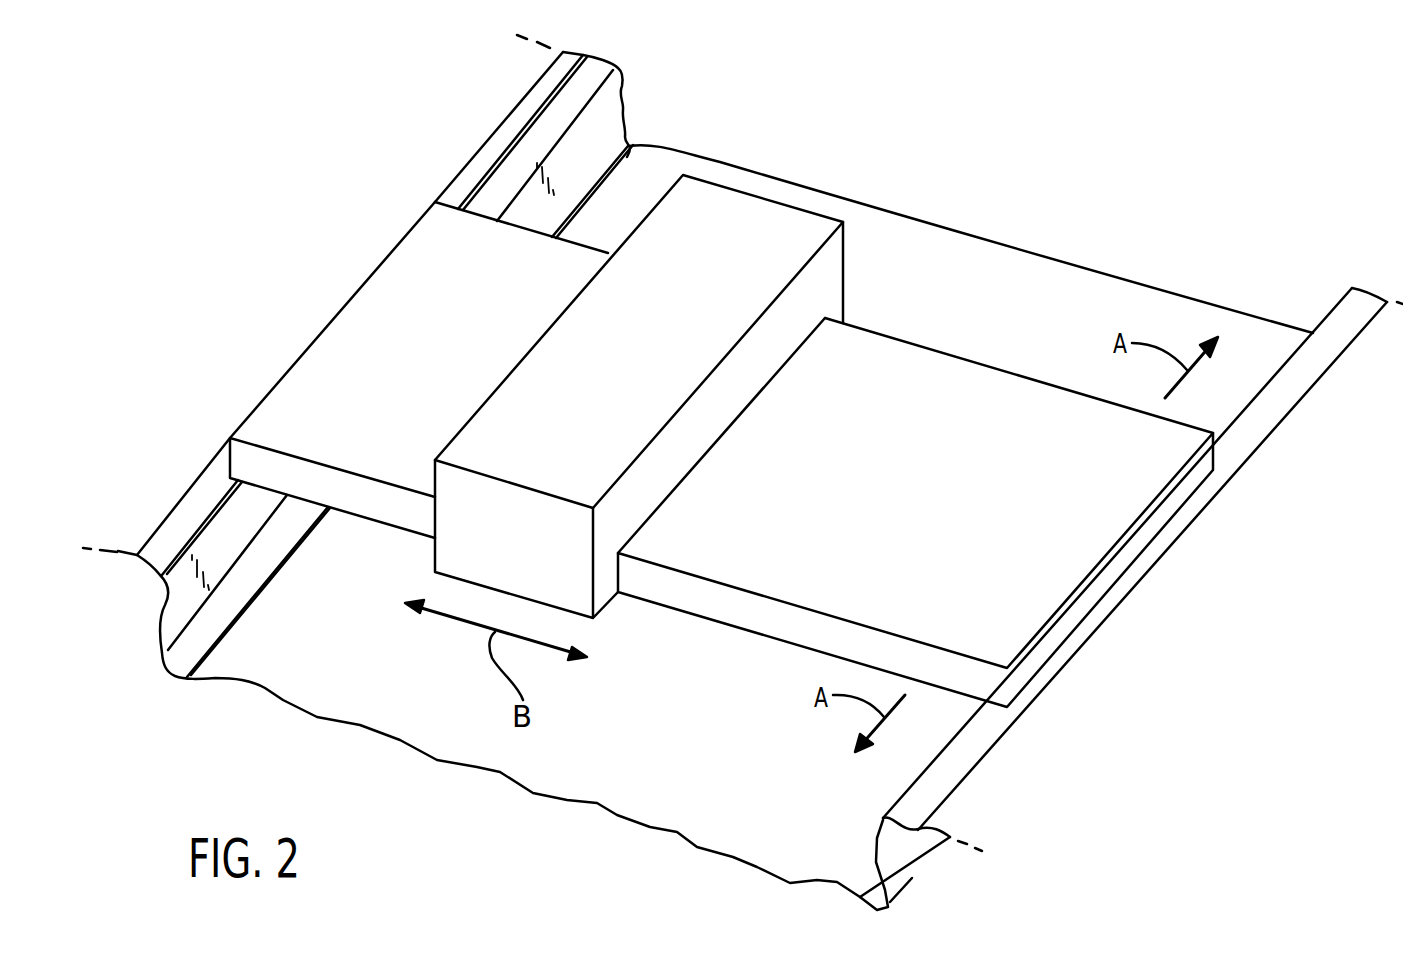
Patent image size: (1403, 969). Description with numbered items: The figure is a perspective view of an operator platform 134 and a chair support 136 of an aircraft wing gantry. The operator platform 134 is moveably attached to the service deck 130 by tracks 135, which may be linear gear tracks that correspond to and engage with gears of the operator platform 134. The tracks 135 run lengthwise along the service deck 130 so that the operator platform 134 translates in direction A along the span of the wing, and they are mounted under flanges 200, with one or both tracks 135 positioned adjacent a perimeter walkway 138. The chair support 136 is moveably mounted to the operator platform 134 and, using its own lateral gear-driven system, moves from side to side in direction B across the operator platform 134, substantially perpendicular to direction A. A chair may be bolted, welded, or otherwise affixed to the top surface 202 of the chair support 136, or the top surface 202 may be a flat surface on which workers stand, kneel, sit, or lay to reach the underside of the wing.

The service deck 130 is at (445, 686).
The operator platform 134 is at (960, 499).
The tracks 135 is at (600, 109).
The chair support 136 is at (787, 243).
The perimeter walkway 138 is at (1212, 649).
The flanges 200 is at (508, 158).
The top surface 202 is at (683, 311).